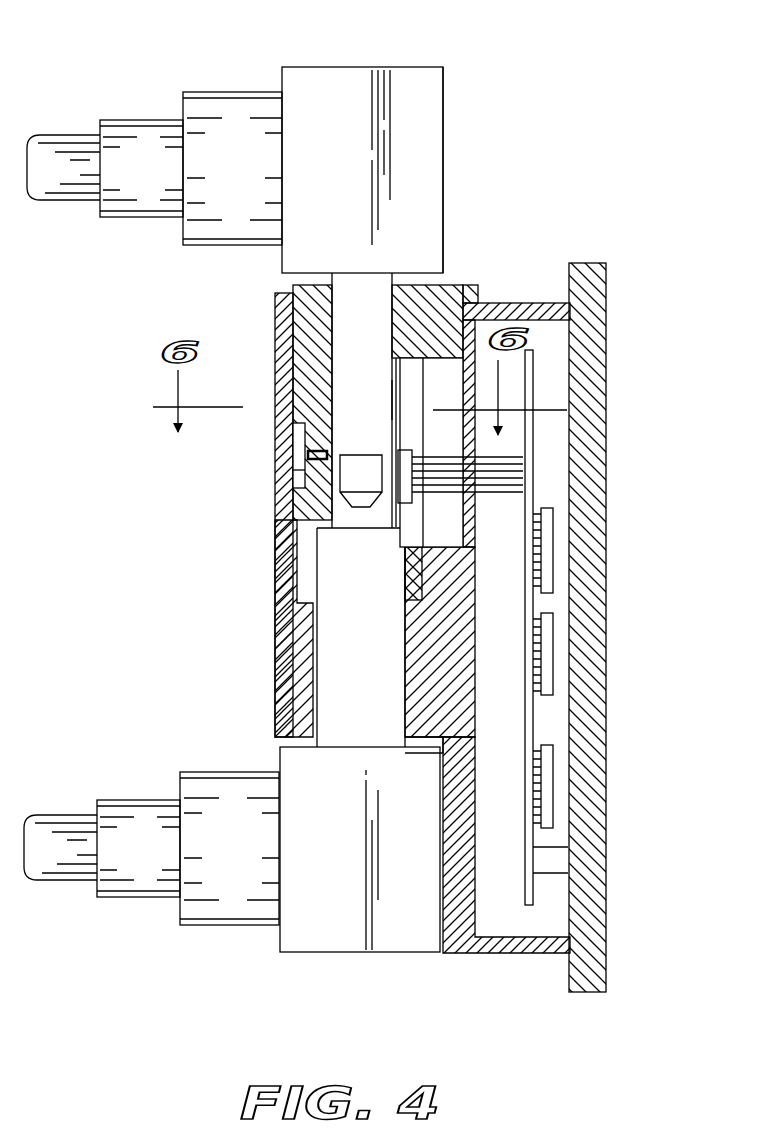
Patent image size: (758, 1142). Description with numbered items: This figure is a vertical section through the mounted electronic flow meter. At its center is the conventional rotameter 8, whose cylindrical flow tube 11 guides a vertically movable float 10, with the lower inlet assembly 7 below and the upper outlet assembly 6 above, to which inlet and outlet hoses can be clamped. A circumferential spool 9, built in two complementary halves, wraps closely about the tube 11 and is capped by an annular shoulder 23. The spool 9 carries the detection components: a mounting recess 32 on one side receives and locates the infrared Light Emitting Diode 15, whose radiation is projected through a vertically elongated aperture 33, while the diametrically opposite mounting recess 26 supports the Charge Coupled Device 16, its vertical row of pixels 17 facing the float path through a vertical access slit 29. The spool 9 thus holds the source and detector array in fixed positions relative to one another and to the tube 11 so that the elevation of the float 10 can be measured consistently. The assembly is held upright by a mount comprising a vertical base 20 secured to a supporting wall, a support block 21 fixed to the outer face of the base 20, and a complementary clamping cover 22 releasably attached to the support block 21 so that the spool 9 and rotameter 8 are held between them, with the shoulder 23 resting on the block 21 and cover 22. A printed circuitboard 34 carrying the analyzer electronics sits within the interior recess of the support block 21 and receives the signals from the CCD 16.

The upper outlet assembly 6 is at (409, 60).
The lower inlet assembly 7 is at (359, 957).
The rotameter 8 is at (458, 184).
The spool 9 is at (276, 282).
The float 10 is at (372, 467).
The flow tube 11 is at (379, 322).
The Light Emitting Diode 15 is at (310, 455).
The Charge Coupled Device 16 is at (417, 500).
The pixels 17 is at (396, 452).
The base 20 is at (590, 620).
The support block 21 is at (453, 700).
The clamping cover 22 is at (288, 622).
The annular shoulder 23 is at (480, 294).
The mounting recess 26 is at (413, 403).
The access slit 29 is at (389, 404).
The mounting recess 32 is at (300, 473).
The aperture 33 is at (312, 456).
The printed circuitboard 34 is at (532, 437).